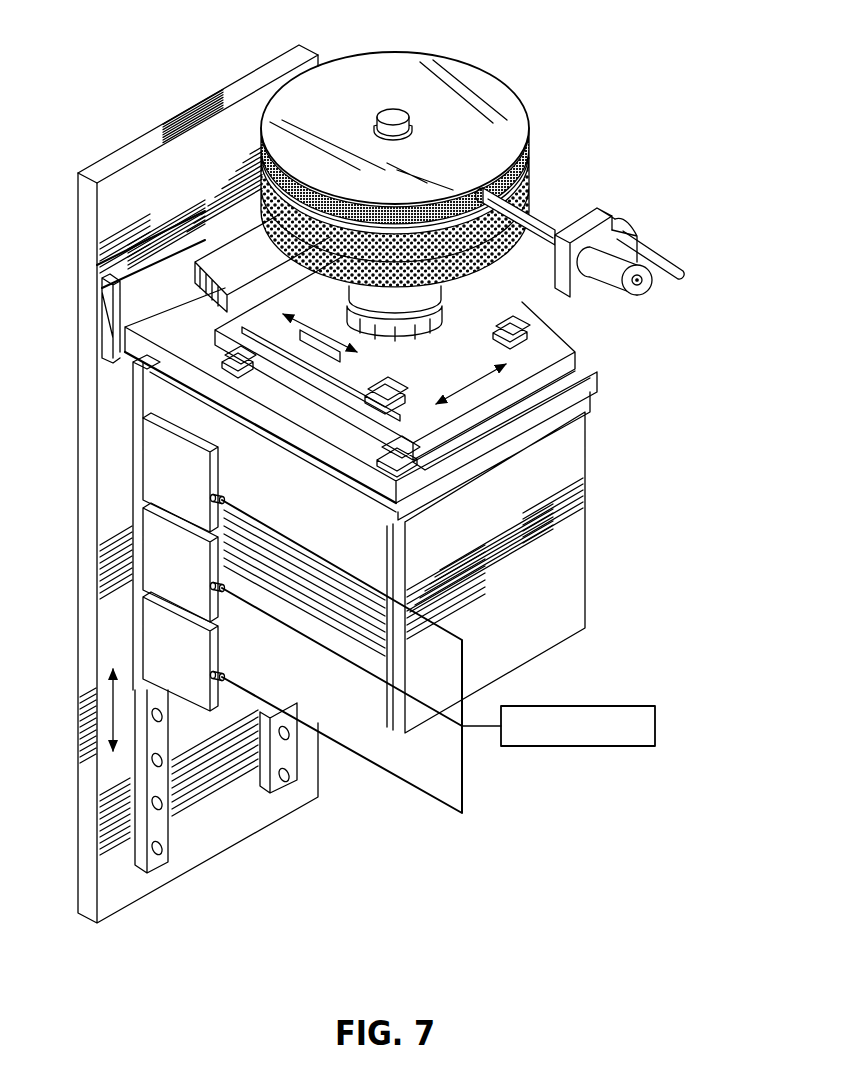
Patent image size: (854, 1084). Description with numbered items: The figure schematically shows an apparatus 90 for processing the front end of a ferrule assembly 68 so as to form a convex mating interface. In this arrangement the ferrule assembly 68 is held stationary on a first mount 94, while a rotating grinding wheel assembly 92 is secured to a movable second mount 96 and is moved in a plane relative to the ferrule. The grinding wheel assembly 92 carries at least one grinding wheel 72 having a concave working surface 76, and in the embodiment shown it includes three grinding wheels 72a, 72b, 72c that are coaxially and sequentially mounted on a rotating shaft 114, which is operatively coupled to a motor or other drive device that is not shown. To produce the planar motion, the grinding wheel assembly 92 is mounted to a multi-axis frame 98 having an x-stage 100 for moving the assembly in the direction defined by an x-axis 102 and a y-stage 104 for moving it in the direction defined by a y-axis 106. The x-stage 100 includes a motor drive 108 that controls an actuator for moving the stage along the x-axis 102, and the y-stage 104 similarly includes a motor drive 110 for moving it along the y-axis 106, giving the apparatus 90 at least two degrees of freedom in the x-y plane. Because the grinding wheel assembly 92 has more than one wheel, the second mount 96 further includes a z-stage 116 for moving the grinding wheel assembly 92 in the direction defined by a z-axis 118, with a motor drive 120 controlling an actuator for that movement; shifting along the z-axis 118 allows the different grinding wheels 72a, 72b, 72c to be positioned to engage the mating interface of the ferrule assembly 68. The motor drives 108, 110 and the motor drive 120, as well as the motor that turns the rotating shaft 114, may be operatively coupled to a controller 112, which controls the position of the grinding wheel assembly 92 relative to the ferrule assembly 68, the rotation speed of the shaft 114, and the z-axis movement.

The ferrule assembly 68 is at (550, 211).
The grinding wheel 72 is at (298, 166).
The grinding wheel 72a is at (262, 240).
The grinding wheel 72b is at (262, 217).
The grinding wheel 72c is at (262, 190).
The concave working surface 76 is at (498, 250).
The apparatus 90 is at (397, 465).
The grinding wheel assembly 92 is at (298, 147).
The first mount 94 is at (652, 224).
The second mount 96 is at (76, 279).
The multi-axis frame 98 is at (614, 396).
The x-stage 100 is at (565, 347).
The x-axis 102 is at (588, 408).
The y-stage 104 is at (278, 290).
The y-axis 106 is at (255, 351).
The motor drive 108 is at (142, 470).
The motor drive 110 is at (142, 545).
The controller 112 is at (656, 722).
The rotating shaft 114 is at (396, 114).
The z-stage 116 is at (174, 835).
The z-axis 118 is at (108, 703).
The motor drive 120 is at (142, 628).